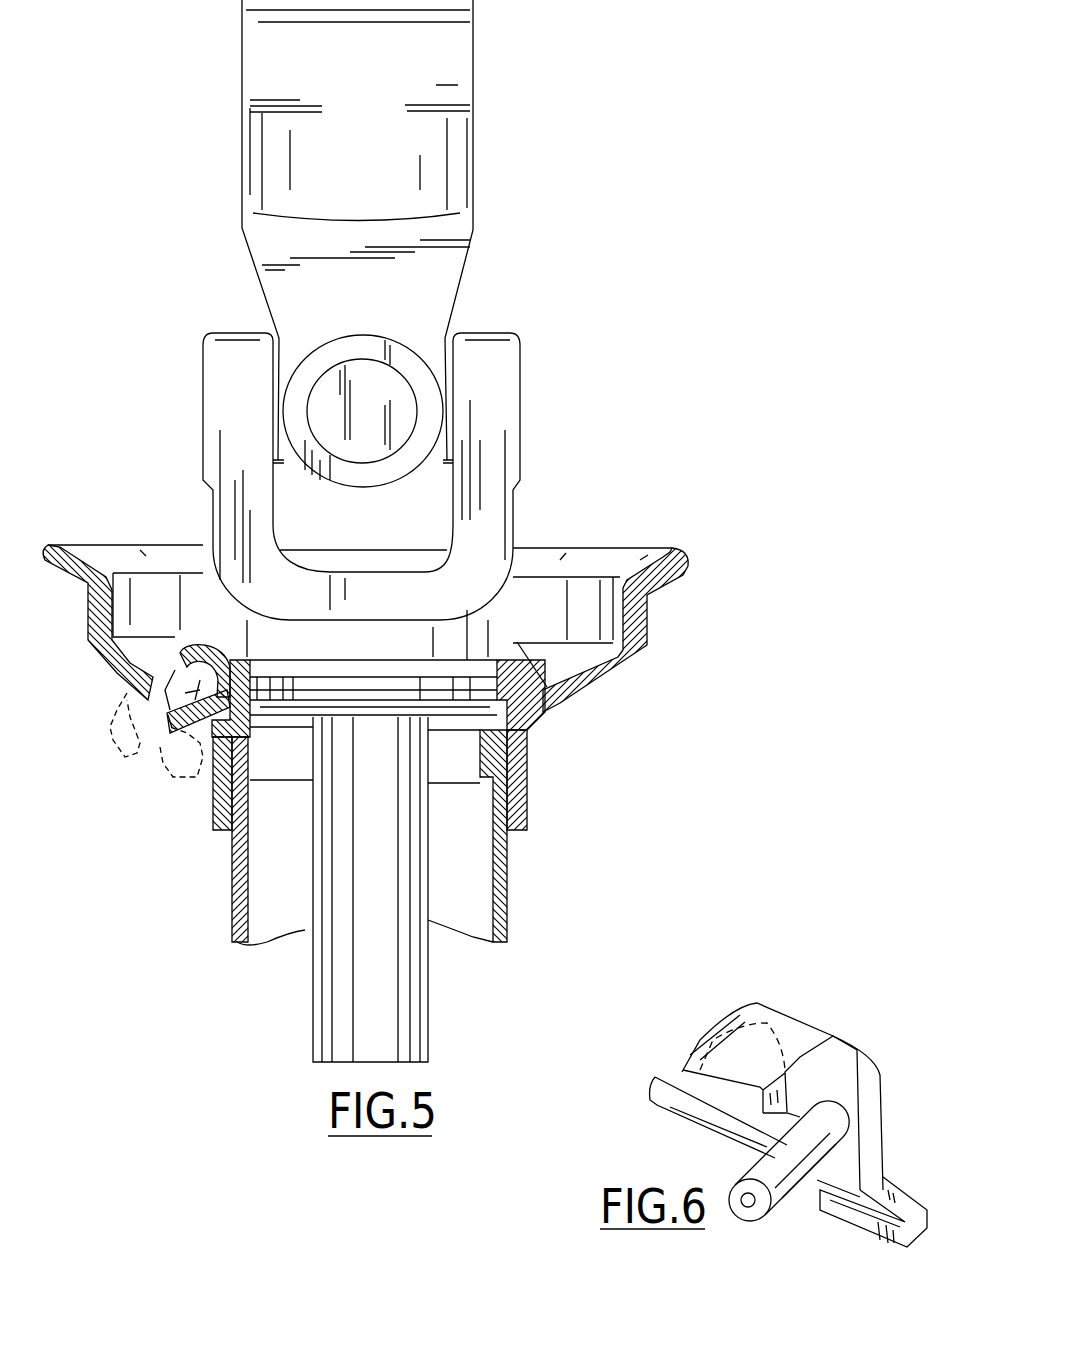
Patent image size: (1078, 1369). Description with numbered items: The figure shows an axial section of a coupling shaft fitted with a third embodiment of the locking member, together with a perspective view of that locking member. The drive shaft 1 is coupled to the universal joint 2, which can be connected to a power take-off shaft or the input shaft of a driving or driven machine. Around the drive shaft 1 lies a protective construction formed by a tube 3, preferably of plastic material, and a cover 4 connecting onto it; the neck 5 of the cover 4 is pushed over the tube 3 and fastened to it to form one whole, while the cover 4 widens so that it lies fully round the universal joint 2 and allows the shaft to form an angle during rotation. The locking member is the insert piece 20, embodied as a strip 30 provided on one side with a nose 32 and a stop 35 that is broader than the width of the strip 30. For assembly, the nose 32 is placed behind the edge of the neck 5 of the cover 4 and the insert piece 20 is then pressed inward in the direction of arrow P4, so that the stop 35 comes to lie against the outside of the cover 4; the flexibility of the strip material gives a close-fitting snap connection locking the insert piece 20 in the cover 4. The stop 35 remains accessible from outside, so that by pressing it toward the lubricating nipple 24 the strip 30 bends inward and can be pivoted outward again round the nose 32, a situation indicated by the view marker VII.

In FIG. 5, the drive shaft 1 is at (373, 1000).
In FIG. 5, the universal joint 2 is at (482, 425).
In FIG. 5, the tube 3 is at (233, 925).
In FIG. 5, the cover 4 is at (603, 683).
In FIG. 5, the neck 5 is at (213, 802).
In FIG. 5, the view VII seal positions VII is at (108, 745).
In FIG. 5, the arrow P4 is at (156, 726).
In FIG. 6, the insert piece 20 is at (822, 1014).
In FIG. 6, the lubricating nipple 24 is at (773, 1208).
In FIG. 6, the strip 30 is at (720, 1037).
In FIG. 6, the nose 32 is at (866, 1220).
In FIG. 6, the stop 35 is at (677, 1107).